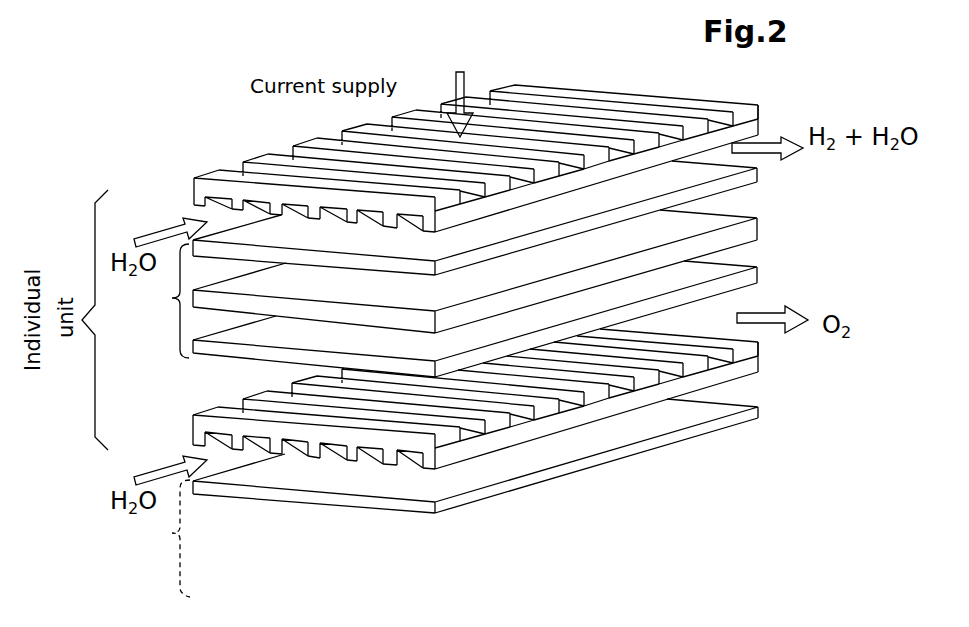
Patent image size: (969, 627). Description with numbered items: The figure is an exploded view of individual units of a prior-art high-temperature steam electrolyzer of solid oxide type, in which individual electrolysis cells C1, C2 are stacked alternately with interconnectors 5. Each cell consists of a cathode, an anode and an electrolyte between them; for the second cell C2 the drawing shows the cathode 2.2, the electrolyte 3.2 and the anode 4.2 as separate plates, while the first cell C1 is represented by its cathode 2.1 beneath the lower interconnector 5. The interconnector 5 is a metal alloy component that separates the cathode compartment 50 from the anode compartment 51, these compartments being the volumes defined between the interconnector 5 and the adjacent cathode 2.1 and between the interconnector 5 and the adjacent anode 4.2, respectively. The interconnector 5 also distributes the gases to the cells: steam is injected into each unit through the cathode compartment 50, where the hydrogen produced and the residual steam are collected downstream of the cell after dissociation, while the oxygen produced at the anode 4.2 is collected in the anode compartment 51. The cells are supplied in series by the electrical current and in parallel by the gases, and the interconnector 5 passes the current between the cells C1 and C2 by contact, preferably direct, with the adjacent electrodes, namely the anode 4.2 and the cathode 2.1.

The interconnector 5 is at (200, 187).
The cathode compartment 50 is at (216, 212).
The anode compartment 51 is at (226, 380).
The cathode 2.1 is at (758, 414).
The cathode 2.2 is at (757, 174).
The electrolyte 3.2 is at (757, 228).
The anode 4.2 is at (757, 275).
The individual electrolysis cell C1 is at (161, 538).
The individual electrolysis cell C2 is at (161, 301).